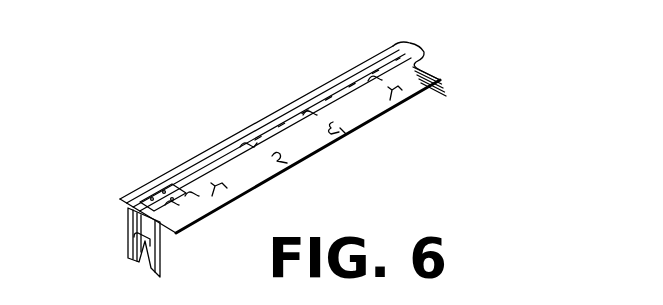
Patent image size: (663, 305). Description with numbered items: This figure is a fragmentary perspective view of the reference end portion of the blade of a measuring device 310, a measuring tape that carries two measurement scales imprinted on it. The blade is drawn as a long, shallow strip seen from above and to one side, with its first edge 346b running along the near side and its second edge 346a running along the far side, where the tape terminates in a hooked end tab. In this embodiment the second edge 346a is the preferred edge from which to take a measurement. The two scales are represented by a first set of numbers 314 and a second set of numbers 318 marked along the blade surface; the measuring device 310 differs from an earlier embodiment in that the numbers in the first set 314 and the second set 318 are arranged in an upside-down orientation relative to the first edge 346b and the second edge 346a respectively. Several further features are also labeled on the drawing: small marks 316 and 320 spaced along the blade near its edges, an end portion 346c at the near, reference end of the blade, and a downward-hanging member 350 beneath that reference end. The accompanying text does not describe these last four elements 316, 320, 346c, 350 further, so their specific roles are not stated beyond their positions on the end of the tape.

The measuring device 310 is at (547, 181).
The first set of numbers 314 is at (199, 194).
The retaining tab 316 is at (340, 135).
The second set of numbers 318 is at (172, 175).
The hem engagement lug 320 is at (232, 140).
The second edge 346a is at (378, 60).
The first edge 346b is at (300, 164).
The end tab 346c is at (130, 203).
The end clip 350 is at (130, 247).